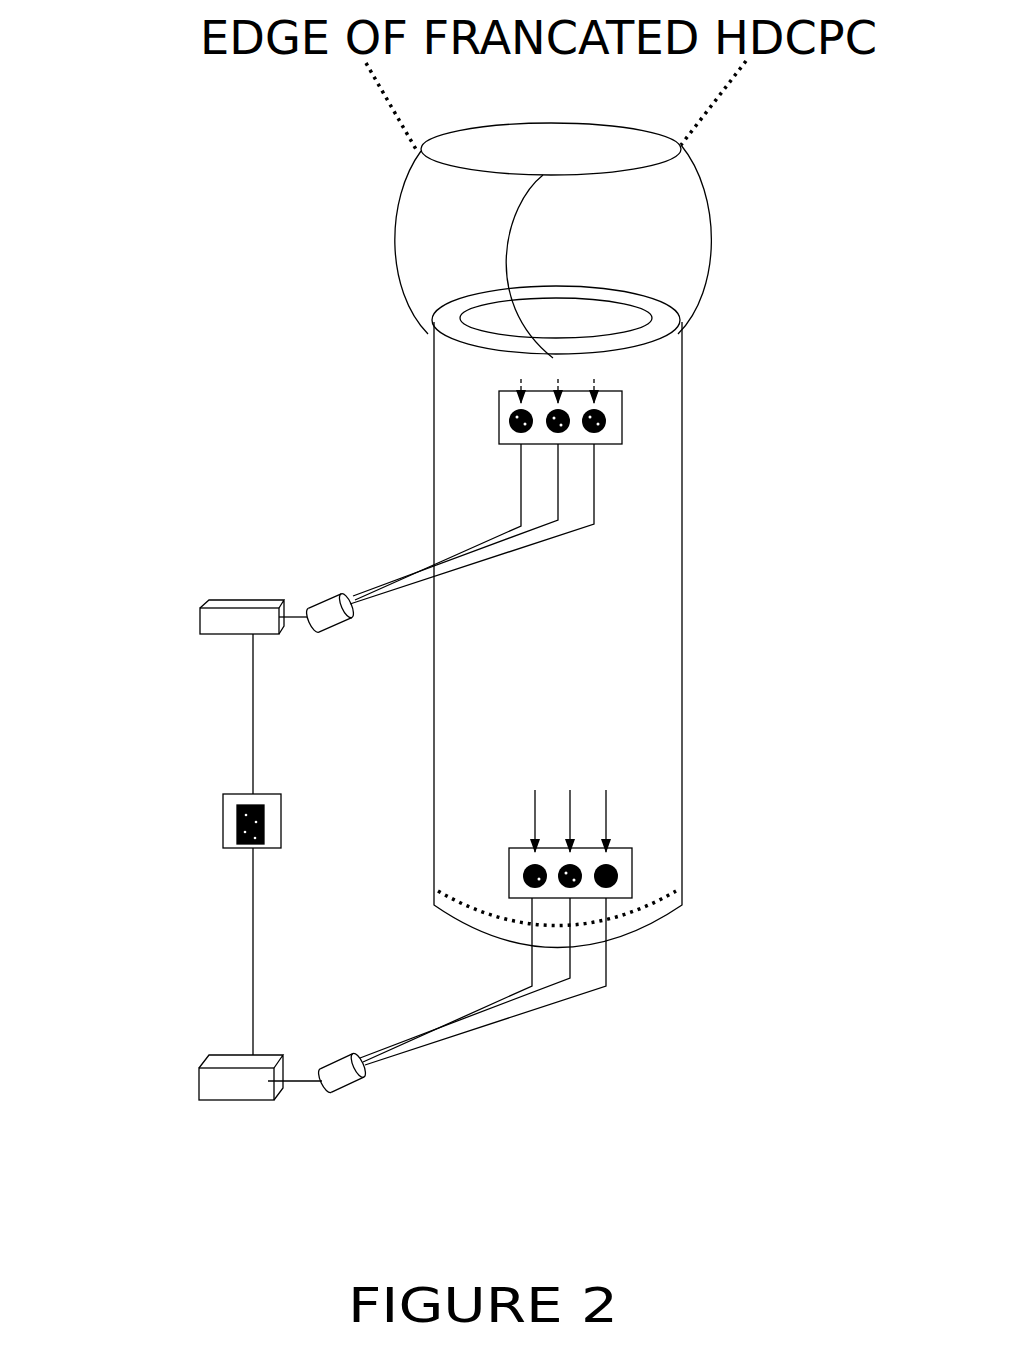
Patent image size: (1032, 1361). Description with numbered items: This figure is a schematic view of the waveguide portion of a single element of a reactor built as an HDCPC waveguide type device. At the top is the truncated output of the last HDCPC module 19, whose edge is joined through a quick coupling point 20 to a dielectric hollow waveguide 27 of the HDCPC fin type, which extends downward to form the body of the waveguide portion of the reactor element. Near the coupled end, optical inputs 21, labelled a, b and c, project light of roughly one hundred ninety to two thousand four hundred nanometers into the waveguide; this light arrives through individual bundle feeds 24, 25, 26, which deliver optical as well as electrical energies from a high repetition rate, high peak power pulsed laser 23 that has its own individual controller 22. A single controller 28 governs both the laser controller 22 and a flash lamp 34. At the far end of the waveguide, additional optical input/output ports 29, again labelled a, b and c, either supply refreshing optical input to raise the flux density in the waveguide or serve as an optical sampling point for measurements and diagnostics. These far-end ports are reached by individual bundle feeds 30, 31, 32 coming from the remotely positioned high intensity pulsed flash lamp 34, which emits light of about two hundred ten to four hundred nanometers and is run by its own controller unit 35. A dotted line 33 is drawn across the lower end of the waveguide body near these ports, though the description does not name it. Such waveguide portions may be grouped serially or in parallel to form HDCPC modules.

The truncated output of the last HDCPC module 19 is at (383, 253).
The quick coupling point 20 is at (687, 332).
The optical inputs 21 is at (635, 416).
The individual controller 22 is at (294, 522).
The pulsed laser 23 is at (328, 645).
The bundle feed 24 is at (603, 485).
The bundle feed 25 is at (545, 470).
The bundle feed 26 is at (510, 488).
The dielectric hollow waveguide 27 is at (692, 685).
The single controller 28 is at (221, 842).
The additional optical input/output 29 is at (642, 870).
The bundle feed 30 is at (612, 955).
The bundle feed 31 is at (574, 973).
The bundle feed 32 is at (520, 958).
The dotted boundary line 33 is at (471, 915).
The pulsed flash lamp 34 is at (333, 1102).
The controller unit 35 is at (216, 1040).